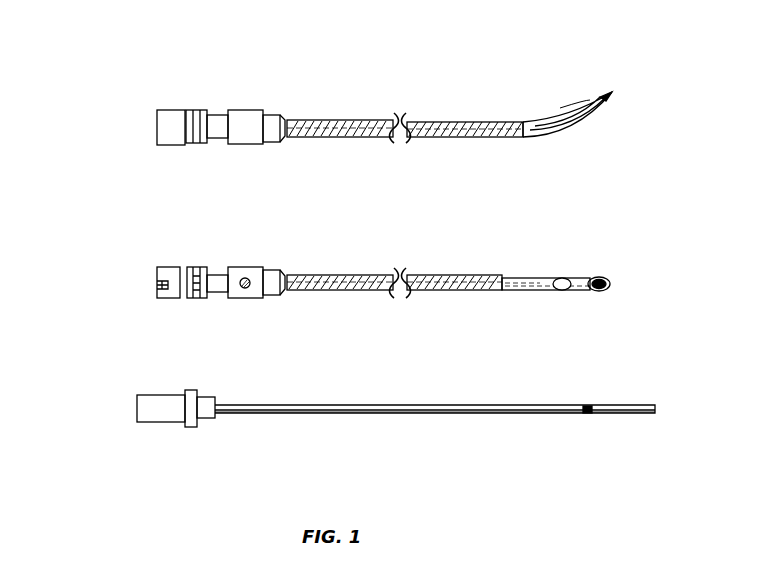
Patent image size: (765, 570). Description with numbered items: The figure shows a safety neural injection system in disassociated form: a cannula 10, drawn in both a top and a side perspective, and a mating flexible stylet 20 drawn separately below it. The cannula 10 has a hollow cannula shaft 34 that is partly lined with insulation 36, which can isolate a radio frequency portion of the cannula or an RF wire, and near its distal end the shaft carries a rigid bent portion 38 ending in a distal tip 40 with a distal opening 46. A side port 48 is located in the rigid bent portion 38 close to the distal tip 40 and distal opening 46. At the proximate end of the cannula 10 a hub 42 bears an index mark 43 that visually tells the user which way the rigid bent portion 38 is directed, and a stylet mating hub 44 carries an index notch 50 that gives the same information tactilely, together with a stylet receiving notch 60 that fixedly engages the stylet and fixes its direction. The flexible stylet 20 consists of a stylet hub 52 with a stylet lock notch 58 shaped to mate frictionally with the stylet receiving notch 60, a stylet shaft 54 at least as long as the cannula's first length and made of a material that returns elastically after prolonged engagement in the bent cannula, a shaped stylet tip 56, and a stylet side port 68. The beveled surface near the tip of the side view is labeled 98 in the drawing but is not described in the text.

The cannula 10 is at (135, 115).
The flexible stylet 20 is at (122, 396).
The hollow cannula shaft 34 is at (337, 122).
The insulation 36 is at (440, 122).
The rigid bent portion 38 is at (585, 117).
The distal tip 40 is at (610, 92).
The hub 42 is at (252, 118).
The index mark 43 is at (246, 290).
The stylet mating hub 44 is at (177, 116).
The distal opening 46 is at (599, 292).
The side port 48 is at (558, 278).
The index notch 50 is at (208, 112).
The stylet hub 52 is at (170, 402).
The stylet shaft 54 is at (418, 406).
The shaped stylet tip 56 is at (652, 414).
The stylet lock notch 58 is at (205, 396).
The stylet receiving notch 60 is at (166, 294).
The stylet side port 68 is at (588, 415).
The beveled tip surface 98 is at (570, 105).